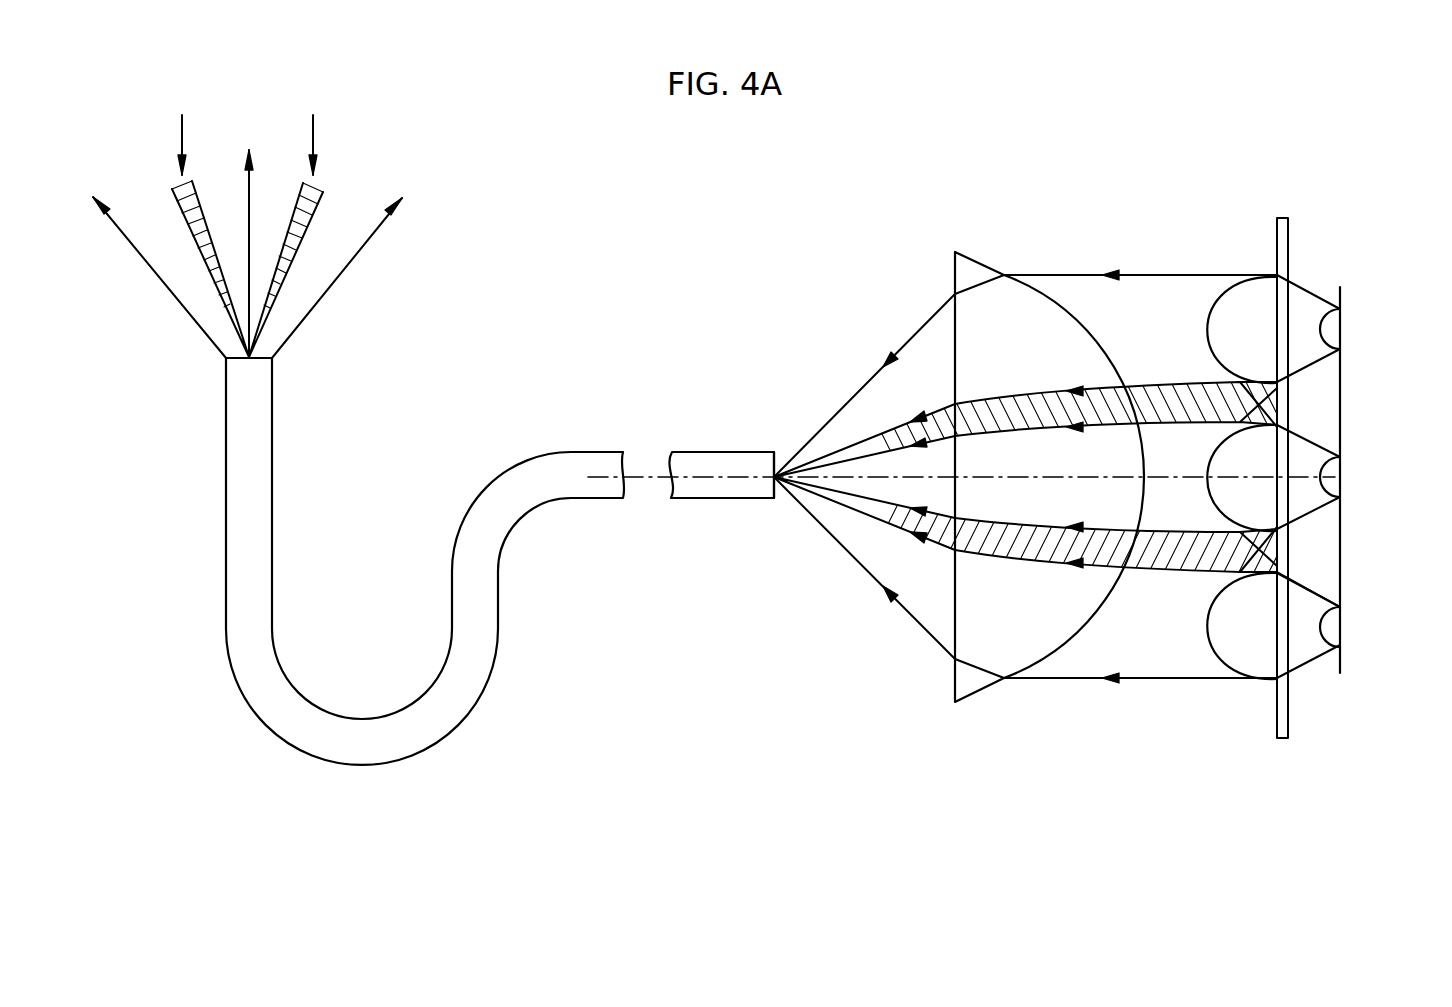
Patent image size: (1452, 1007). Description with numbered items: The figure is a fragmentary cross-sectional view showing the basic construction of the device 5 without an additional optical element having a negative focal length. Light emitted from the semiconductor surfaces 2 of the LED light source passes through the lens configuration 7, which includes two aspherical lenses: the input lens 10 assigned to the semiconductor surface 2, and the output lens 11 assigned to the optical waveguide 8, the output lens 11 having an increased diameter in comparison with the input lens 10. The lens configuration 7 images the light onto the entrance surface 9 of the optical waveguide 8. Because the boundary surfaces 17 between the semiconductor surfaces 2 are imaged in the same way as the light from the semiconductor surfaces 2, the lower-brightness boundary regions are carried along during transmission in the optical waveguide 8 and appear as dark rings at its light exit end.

The semiconductor surface 2 is at (1331, 330).
The device 5 is at (1385, 635).
The lens configuration 7 is at (1117, 755).
The optical waveguide 8 is at (468, 697).
The entrance surface 9 is at (784, 462).
The input lens 10 is at (1244, 297).
The output lens 11 is at (970, 272).
The boundary surface 17 is at (1325, 562).